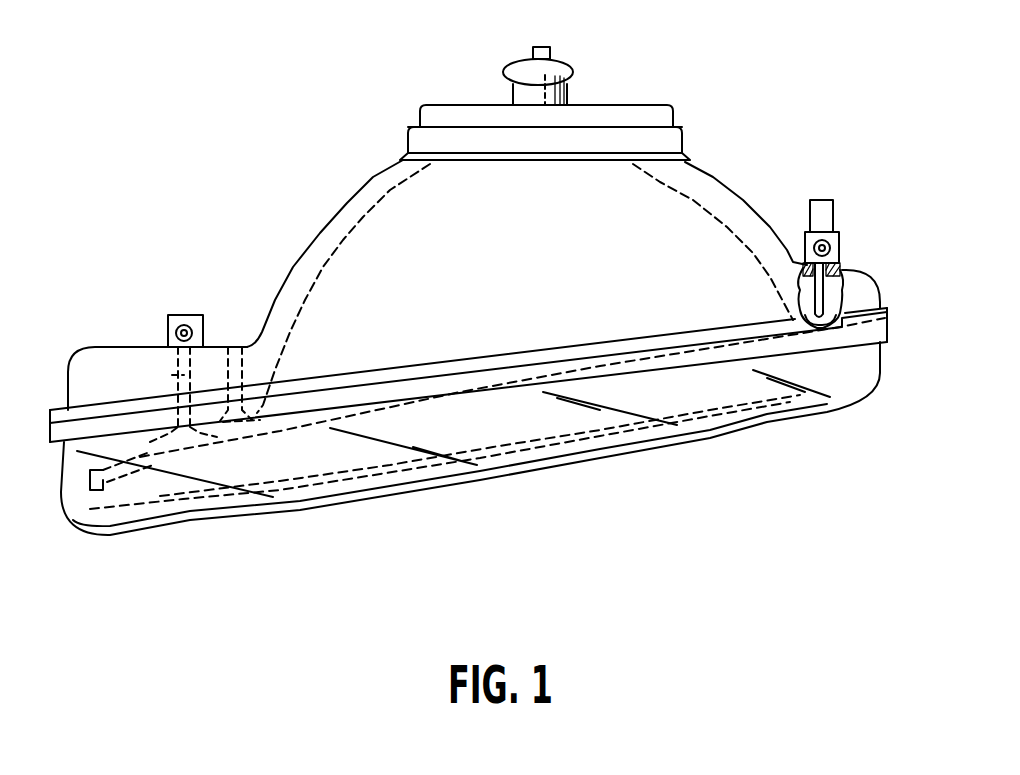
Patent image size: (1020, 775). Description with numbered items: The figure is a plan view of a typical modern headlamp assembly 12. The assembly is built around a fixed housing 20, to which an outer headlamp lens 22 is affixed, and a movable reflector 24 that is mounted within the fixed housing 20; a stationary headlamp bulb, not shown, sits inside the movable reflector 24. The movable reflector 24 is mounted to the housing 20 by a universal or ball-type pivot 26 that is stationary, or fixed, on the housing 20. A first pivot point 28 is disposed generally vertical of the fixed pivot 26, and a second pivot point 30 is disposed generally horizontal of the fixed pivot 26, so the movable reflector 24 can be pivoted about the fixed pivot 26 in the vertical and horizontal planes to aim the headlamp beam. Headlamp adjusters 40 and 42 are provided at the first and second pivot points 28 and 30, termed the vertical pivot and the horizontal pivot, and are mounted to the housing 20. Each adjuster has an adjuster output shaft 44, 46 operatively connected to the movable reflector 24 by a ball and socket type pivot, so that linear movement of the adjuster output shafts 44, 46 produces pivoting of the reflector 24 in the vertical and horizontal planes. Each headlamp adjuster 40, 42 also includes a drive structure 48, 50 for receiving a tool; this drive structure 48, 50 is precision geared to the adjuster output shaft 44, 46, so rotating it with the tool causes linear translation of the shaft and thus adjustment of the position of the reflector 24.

The headlamp assembly 12 is at (358, 118).
The fixed housing 20 is at (283, 285).
The outer headlamp lens 22 is at (713, 442).
The movable reflector 24 is at (345, 230).
The universal or ball-type pivot 26 is at (251, 340).
The first pivot point 28 is at (168, 438).
The second pivot point 30 is at (890, 313).
The headlamp adjuster 40 is at (173, 311).
The headlamp adjuster 42 is at (845, 244).
The adjuster output shaft 44 is at (177, 375).
The adjuster output shaft 46 is at (820, 305).
The drive structure 48 is at (168, 316).
The drive structure 50 is at (806, 263).